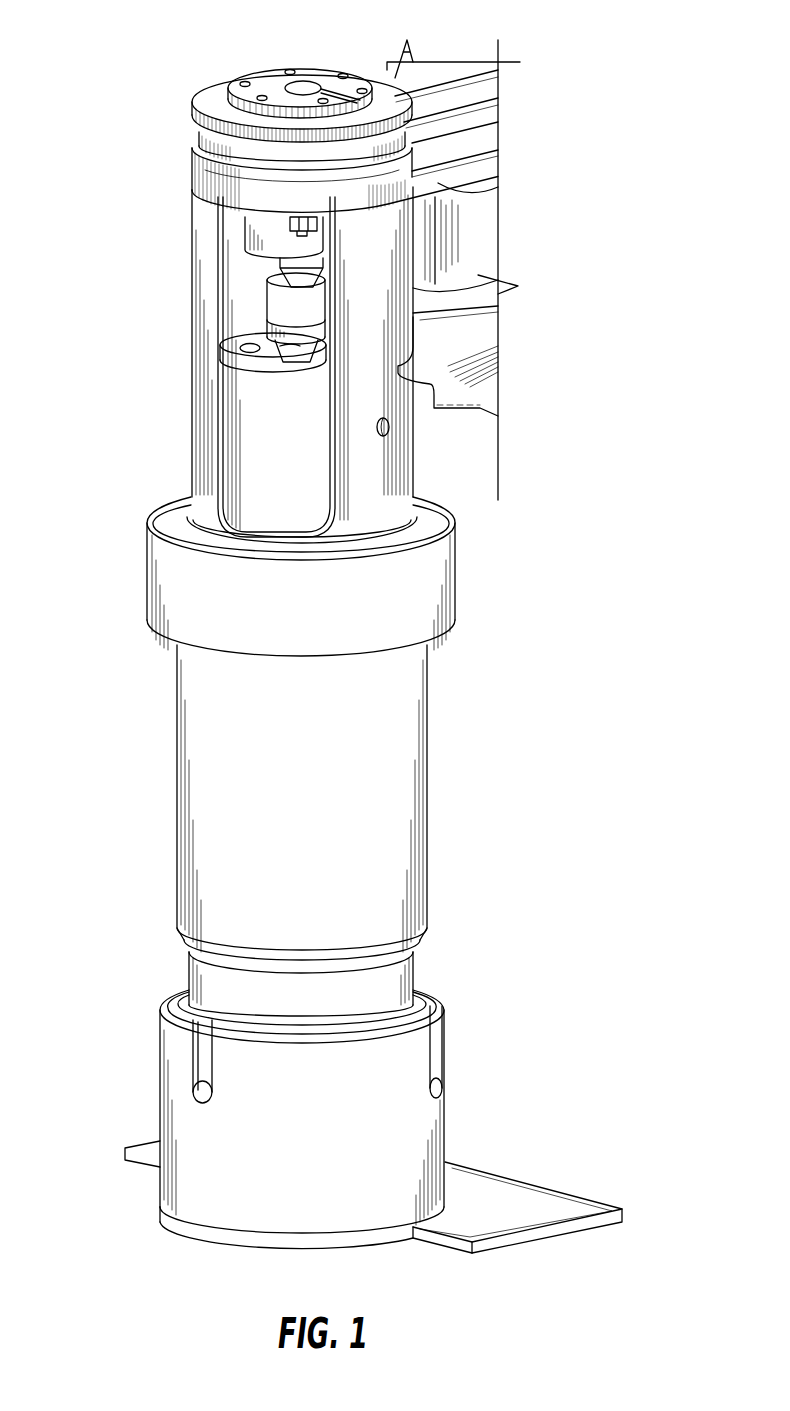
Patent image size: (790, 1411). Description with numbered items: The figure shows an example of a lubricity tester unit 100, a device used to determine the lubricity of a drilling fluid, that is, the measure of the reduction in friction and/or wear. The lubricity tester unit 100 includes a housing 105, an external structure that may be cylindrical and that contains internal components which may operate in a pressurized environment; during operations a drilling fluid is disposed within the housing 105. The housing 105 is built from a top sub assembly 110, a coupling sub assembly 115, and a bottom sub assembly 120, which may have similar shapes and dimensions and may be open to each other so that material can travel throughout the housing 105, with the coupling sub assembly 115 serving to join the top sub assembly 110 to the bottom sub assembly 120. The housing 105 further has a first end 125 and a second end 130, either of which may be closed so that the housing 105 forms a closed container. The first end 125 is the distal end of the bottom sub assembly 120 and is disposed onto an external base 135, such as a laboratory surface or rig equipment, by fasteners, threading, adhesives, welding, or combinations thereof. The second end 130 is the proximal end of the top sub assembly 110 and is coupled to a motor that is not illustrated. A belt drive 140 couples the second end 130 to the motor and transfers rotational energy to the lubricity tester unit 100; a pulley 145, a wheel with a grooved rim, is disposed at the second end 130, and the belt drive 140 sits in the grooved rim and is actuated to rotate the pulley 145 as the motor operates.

The lubricity tester unit 100 is at (558, 727).
The housing 105 is at (217, 735).
The top sub assembly 110 is at (402, 455).
The coupling sub assembly 115 is at (412, 787).
The bottom sub assembly 120 is at (407, 1133).
The first end 125 is at (265, 1250).
The second end 130 is at (200, 184).
The external base 135 is at (567, 1203).
The belt drive 140 is at (488, 112).
The pulley 145 is at (272, 73).